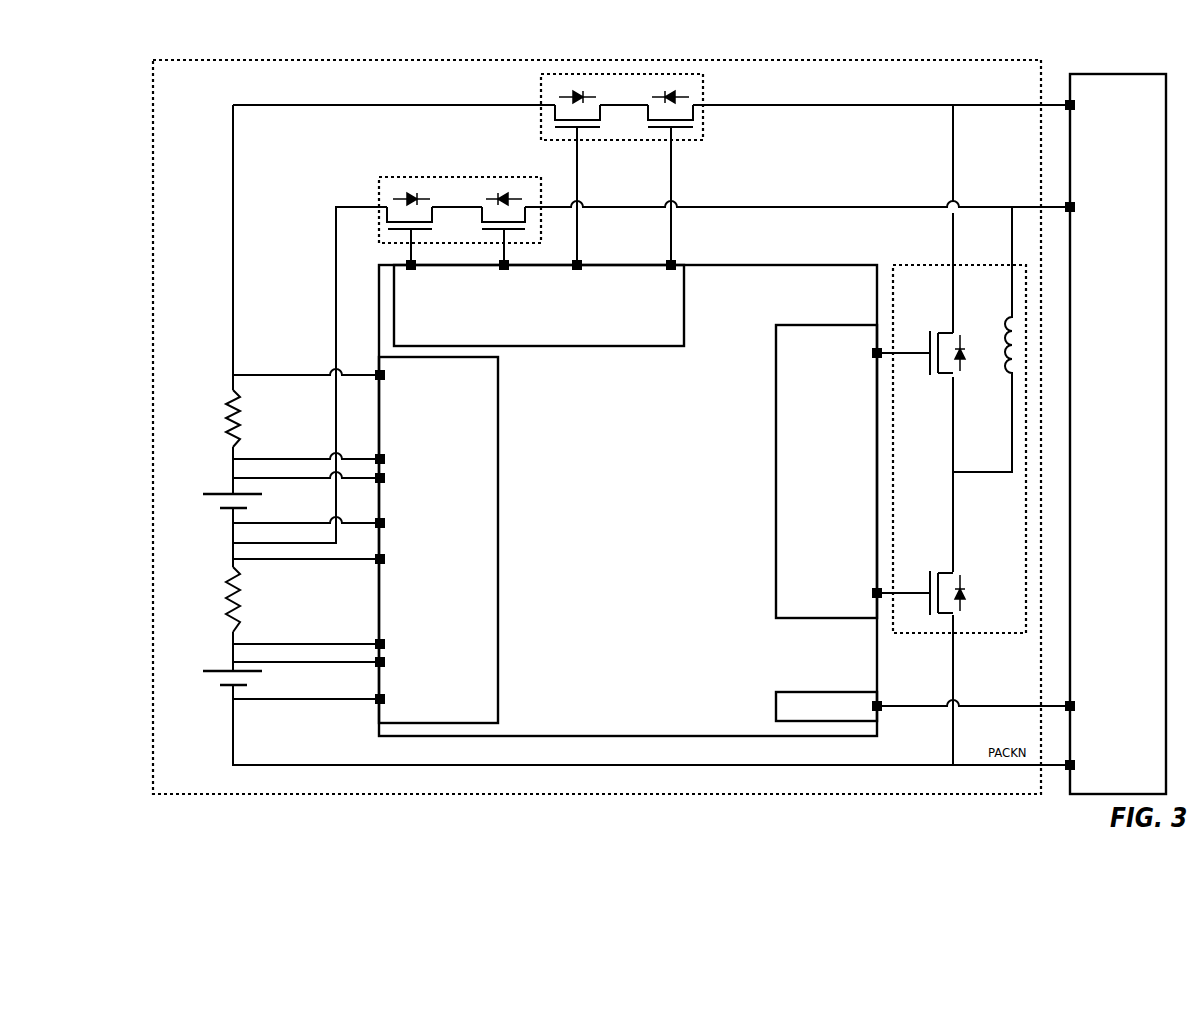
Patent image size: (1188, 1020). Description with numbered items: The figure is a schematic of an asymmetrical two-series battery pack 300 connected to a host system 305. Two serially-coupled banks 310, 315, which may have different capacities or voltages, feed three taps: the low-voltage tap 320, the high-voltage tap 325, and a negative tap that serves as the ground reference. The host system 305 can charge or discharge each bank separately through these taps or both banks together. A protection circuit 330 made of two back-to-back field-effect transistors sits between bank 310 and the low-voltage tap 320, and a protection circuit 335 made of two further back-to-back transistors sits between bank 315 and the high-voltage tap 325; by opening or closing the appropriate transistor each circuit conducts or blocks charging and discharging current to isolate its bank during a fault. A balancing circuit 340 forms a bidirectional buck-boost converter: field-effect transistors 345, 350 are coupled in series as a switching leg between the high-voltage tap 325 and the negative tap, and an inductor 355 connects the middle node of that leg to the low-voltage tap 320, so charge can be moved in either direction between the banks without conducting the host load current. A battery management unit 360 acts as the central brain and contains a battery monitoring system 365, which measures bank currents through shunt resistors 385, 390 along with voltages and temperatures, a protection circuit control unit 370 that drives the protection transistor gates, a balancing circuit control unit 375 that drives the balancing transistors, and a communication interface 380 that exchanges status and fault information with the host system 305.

The battery pack 300 is at (148, 60).
The host system 305 is at (1118, 434).
The bank 310 is at (226, 666).
The bank 315 is at (226, 489).
The low-voltage tap 320 is at (840, 205).
The high-voltage tap 325 is at (840, 103).
The protection circuit 330 is at (388, 175).
The protection circuit 335 is at (541, 122).
The balancing circuit 340 is at (952, 435).
The field-effect transistor 345 is at (946, 328).
The field-effect transistor 350 is at (946, 566).
The inductor 355 is at (1010, 328).
The battery management unit 360 is at (628, 500).
The battery monitoring system 365 is at (436, 540).
The protection circuit control unit 370 is at (539, 303).
The balancing circuit control unit 375 is at (829, 471).
The communication interface 380 is at (785, 690).
The shunt resistor 385 is at (226, 598).
The shunt resistor 390 is at (226, 424).